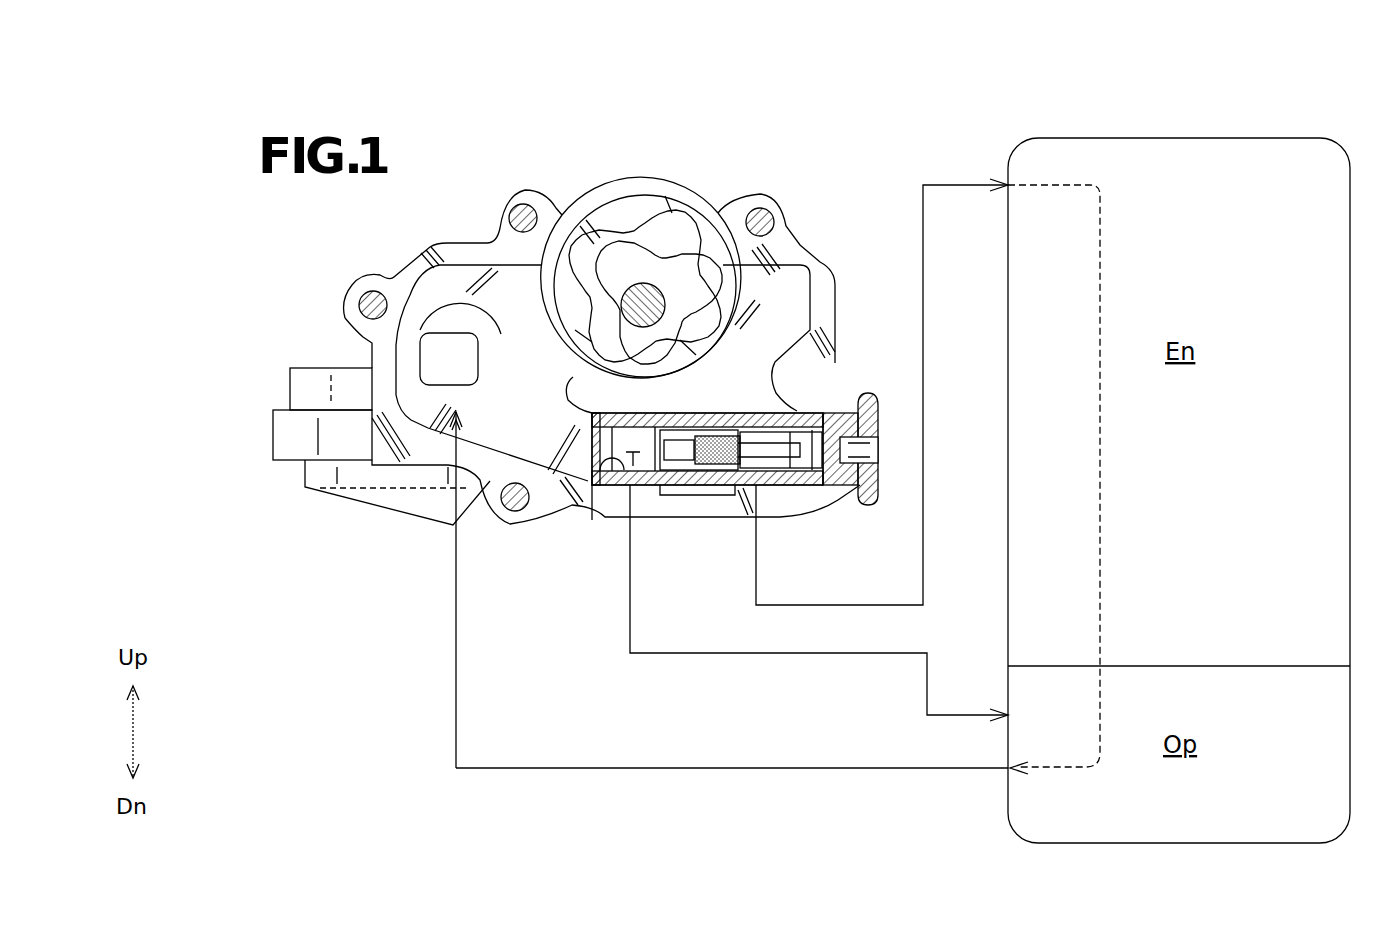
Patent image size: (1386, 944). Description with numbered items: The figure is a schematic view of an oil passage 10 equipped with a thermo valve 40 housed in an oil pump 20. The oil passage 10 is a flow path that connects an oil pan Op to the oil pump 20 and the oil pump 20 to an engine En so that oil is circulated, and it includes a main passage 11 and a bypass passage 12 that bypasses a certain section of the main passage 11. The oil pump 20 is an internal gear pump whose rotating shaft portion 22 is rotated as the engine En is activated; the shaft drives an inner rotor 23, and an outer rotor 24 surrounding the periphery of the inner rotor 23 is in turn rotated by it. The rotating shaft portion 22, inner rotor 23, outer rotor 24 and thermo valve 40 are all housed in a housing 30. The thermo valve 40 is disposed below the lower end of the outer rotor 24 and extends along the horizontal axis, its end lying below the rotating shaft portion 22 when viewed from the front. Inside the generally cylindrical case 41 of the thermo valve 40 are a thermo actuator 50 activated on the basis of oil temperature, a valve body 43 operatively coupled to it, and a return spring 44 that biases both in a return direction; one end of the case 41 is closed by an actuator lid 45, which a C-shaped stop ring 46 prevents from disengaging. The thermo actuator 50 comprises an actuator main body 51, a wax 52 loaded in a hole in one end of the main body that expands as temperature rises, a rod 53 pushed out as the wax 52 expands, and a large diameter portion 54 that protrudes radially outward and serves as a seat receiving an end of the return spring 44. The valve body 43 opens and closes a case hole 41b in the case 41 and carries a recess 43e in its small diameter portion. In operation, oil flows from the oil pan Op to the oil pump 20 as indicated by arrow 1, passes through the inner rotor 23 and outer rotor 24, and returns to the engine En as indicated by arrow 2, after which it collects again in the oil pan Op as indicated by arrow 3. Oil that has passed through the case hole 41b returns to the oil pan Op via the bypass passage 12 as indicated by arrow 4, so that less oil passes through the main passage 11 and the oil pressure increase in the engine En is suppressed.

The arrow 1 is at (553, 770).
The arrow 2 is at (923, 303).
The arrow 3 is at (1100, 397).
The arrow 4 is at (695, 655).
The oil passage 10 is at (895, 712).
The main passage 11 is at (892, 606).
The bypass passage 12 is at (826, 654).
The oil pump 20 is at (576, 122).
The rotating shaft portion 22 is at (650, 284).
The inner rotor 23 is at (625, 248).
The outer rotor 24 is at (580, 190).
The housing 30 is at (775, 190).
The thermo valve 40 is at (880, 572).
The case 41 is at (735, 488).
The case hole 41b is at (603, 490).
The valve body 43 is at (648, 490).
The recess 43e is at (641, 420).
The return spring 44 is at (696, 495).
The actuator lid 45 is at (860, 505).
The C-shaped stop ring 46 is at (820, 488).
The thermo actuator 50 is at (777, 482).
The actuator main body 51 is at (780, 430).
The wax 52 is at (716, 430).
The rod 53 is at (830, 418).
The large diameter portion 54 is at (755, 430).